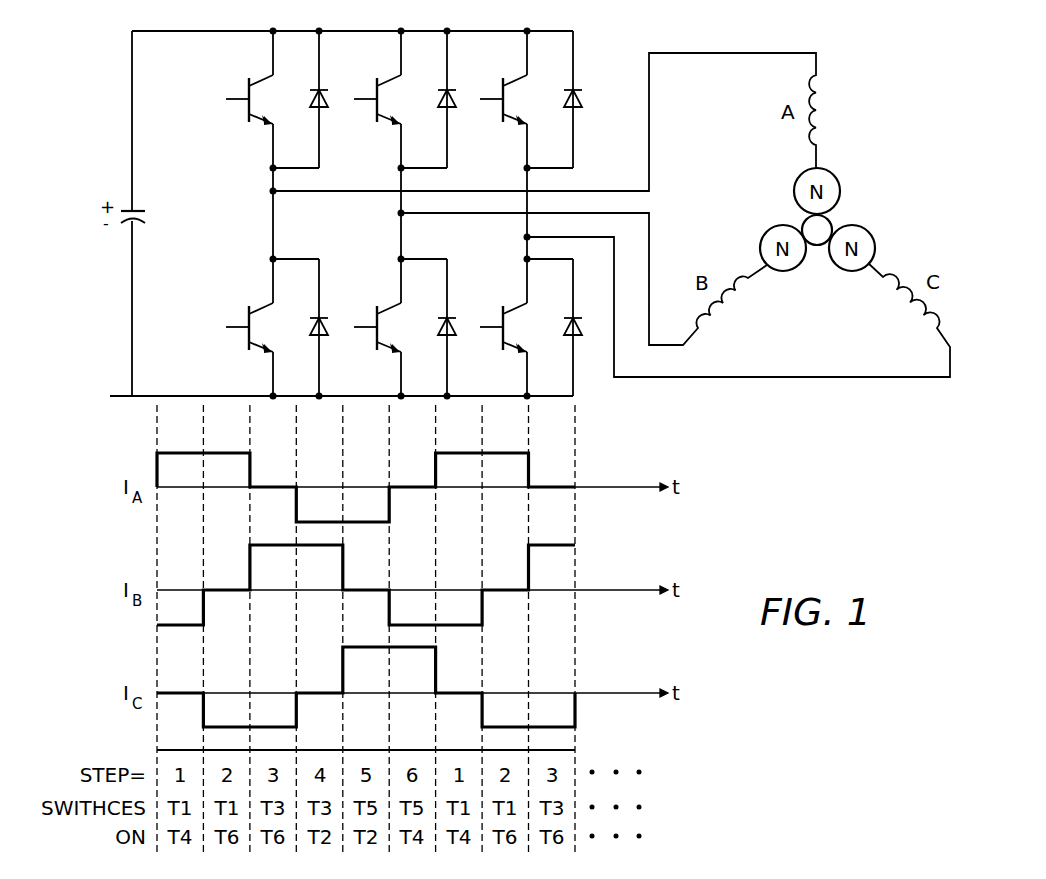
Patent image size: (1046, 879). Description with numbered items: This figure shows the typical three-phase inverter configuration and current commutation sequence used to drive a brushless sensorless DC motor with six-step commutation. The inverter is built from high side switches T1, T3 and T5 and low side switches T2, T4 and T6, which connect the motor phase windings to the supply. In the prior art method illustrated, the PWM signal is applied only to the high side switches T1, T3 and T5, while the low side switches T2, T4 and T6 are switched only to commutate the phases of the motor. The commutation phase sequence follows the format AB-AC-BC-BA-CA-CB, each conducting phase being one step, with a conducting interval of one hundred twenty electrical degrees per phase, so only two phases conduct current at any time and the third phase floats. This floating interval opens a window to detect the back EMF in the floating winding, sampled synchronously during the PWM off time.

The high side switch T1 is at (249, 89).
The low side switch T2 is at (249, 317).
The high side switch T3 is at (377, 89).
The low side switch T4 is at (377, 317).
The high side switch T5 is at (503, 89).
The low side switch T6 is at (503, 317).